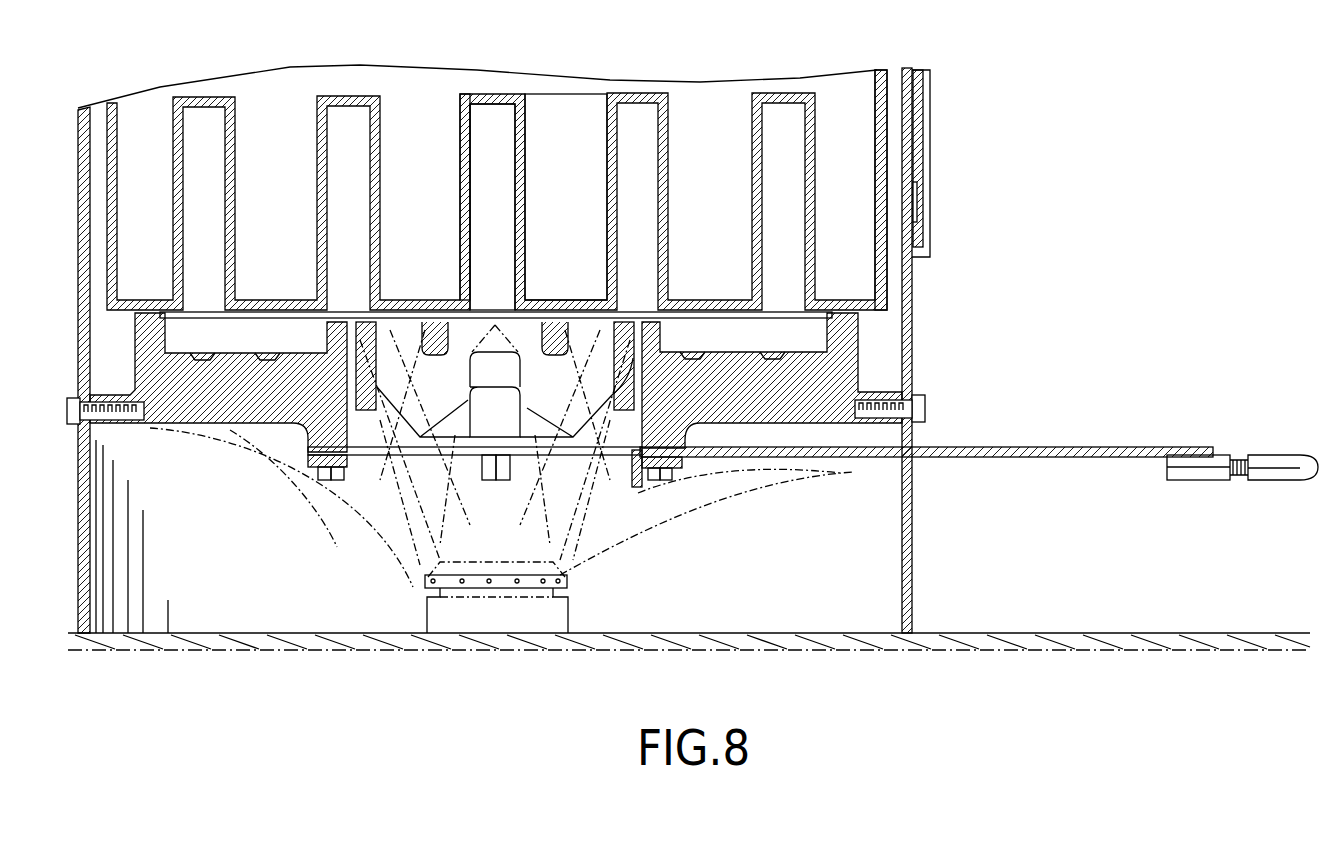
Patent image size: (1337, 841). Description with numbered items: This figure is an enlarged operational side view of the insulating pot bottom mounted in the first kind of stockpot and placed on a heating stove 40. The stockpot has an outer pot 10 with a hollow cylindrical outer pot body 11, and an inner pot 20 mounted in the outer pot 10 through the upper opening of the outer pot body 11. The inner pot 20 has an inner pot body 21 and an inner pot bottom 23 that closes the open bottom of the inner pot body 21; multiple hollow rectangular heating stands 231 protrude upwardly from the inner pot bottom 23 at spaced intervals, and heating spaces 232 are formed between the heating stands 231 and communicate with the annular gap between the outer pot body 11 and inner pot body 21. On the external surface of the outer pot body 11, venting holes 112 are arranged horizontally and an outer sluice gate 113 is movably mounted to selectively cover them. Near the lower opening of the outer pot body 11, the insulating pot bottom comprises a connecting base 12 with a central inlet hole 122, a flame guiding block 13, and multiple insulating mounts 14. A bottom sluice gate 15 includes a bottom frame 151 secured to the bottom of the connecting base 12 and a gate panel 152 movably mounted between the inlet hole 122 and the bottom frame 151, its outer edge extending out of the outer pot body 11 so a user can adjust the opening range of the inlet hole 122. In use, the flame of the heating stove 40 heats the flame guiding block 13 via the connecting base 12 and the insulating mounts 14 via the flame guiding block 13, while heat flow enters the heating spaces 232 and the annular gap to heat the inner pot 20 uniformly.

The outer pot 10 is at (958, 292).
The outer pot body 11 is at (915, 565).
The connecting base 12 is at (862, 350).
The flame guiding block 13 is at (400, 430).
The insulating mounts 14 is at (300, 325).
The bottom sluice gate 15 is at (1163, 493).
The inner pot 20 is at (695, 88).
The inner pot body 21 is at (880, 122).
The inner pot bottom 23 is at (580, 118).
The heating stove 40 is at (568, 582).
The venting holes 112 is at (913, 196).
The outer sluice gate 113 is at (918, 155).
The inlet hole 122 is at (638, 428).
The bottom frame 151 is at (305, 467).
The gate panel 152 is at (1060, 440).
The heating stands 231 is at (463, 110).
The heating spaces 232 is at (512, 162).